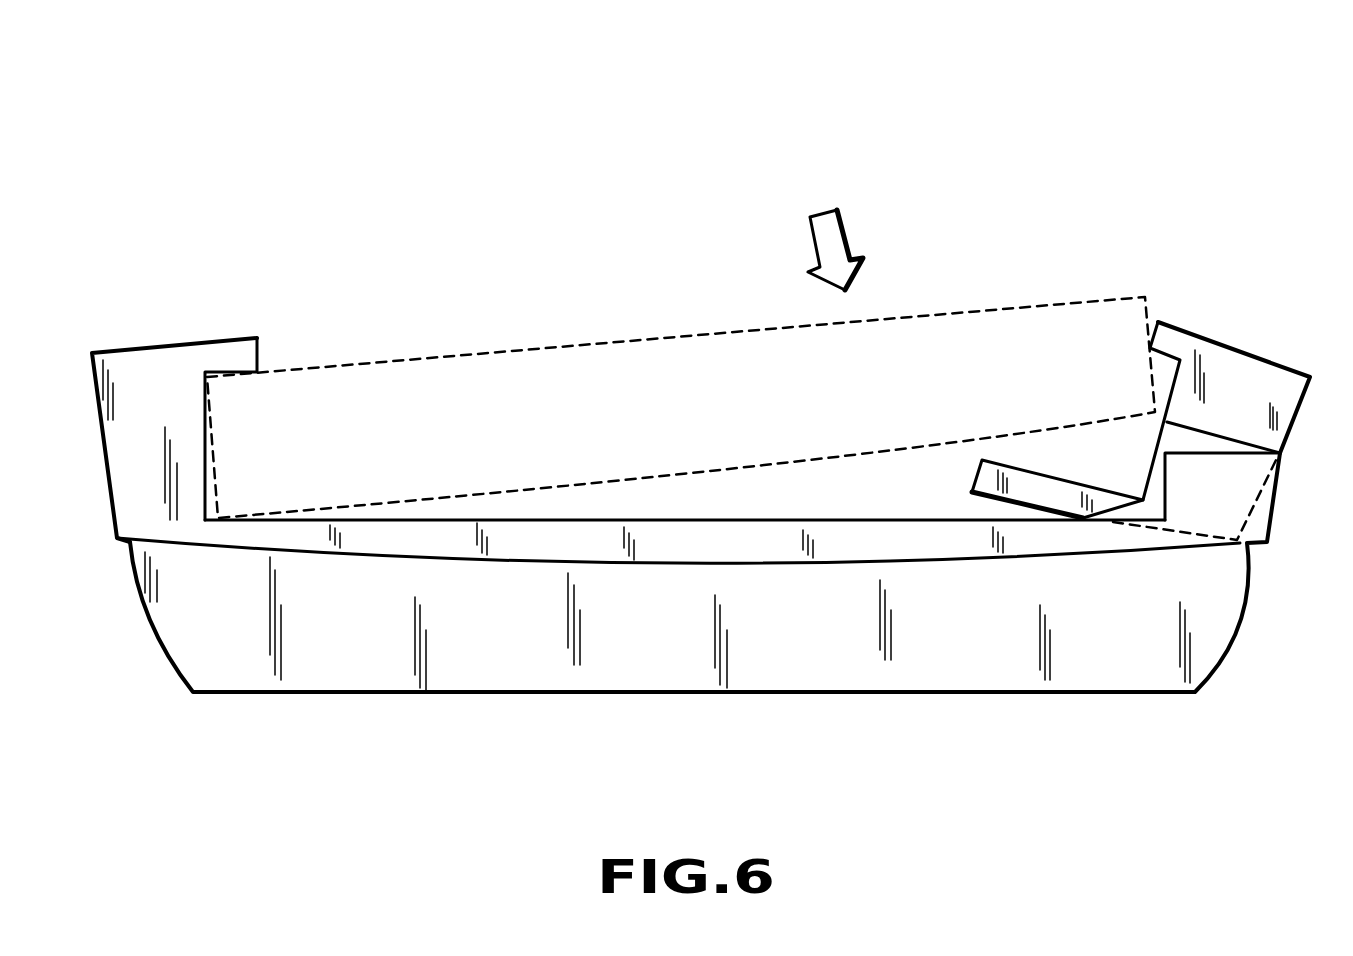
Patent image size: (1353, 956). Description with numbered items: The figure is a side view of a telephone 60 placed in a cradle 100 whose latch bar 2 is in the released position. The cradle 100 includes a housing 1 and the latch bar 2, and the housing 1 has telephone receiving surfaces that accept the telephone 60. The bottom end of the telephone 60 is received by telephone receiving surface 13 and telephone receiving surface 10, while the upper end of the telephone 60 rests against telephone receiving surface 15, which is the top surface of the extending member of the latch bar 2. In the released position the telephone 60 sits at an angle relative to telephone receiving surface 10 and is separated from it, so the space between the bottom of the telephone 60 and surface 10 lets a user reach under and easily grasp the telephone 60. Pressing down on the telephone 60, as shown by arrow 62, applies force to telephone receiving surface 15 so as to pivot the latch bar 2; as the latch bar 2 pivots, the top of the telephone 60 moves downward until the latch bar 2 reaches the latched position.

The cradle 100 is at (935, 97).
The housing 1 is at (838, 646).
The latch bar 2 is at (1238, 411).
The telephone receiving surface 10 is at (733, 518).
The telephone receiving surface 13 is at (213, 512).
The telephone receiving surface 15 is at (1075, 478).
The telephone 60 is at (650, 355).
The arrow 62 is at (815, 243).